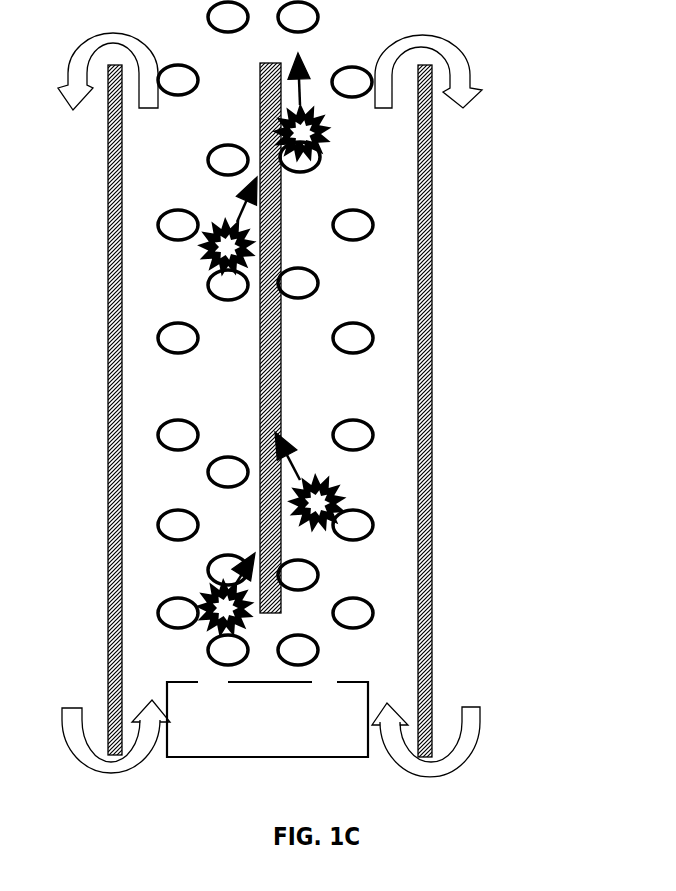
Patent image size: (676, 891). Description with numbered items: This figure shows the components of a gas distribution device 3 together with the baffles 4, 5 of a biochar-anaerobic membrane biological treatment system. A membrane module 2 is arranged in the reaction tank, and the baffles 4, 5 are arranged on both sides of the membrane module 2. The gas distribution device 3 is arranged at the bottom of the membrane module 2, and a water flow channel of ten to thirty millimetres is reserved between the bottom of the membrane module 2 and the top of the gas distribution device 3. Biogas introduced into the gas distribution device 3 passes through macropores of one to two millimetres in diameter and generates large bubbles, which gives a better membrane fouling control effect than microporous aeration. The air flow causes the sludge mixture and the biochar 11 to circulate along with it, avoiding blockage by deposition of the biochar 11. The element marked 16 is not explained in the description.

The central electrode plate 2 is at (268, 306).
The collection container 3 is at (267, 723).
The left electrode plate 4 is at (87, 410).
The right electrode plate 5 is at (447, 411).
The electrical discharge / spark 11 is at (333, 165).
The particles passing through opening 16 is at (330, 675).